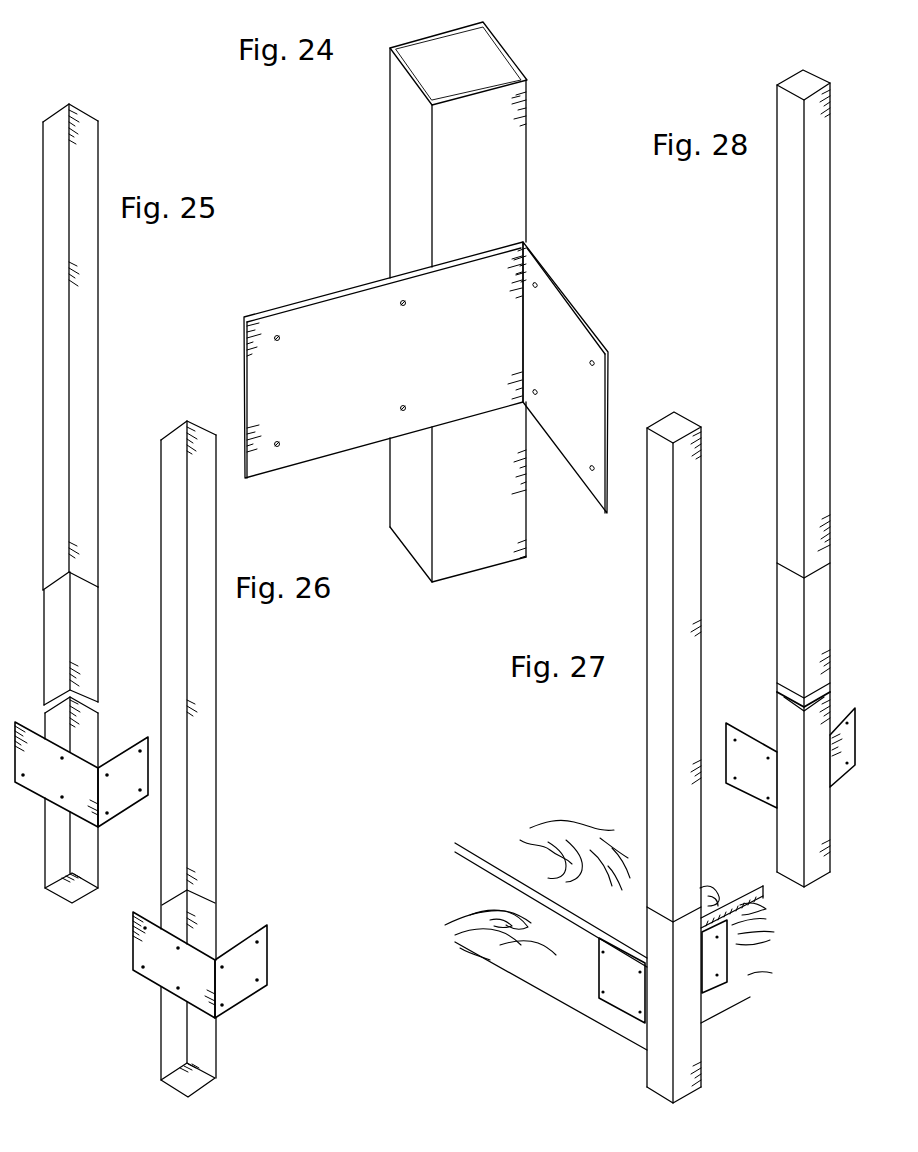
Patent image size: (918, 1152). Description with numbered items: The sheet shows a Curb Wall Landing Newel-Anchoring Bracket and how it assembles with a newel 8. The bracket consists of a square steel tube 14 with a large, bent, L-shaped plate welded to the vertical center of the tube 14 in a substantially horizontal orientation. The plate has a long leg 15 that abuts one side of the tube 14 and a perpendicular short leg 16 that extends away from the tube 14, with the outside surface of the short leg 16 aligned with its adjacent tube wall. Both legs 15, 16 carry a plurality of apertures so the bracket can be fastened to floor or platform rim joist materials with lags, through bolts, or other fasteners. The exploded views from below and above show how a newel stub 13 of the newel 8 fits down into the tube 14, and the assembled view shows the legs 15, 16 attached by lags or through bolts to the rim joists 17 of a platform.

In FIG. 25, the newel 8 is at (87, 313).
In FIG. 25, the newel stub 13 is at (83, 627).
In FIG. 24, the square steel tube 14 is at (407, 173).
In FIG. 24, the long leg 15 is at (343, 330).
In FIG. 24, the short leg 16 is at (568, 325).
In FIG. 27, the rim joists 17 is at (553, 953).